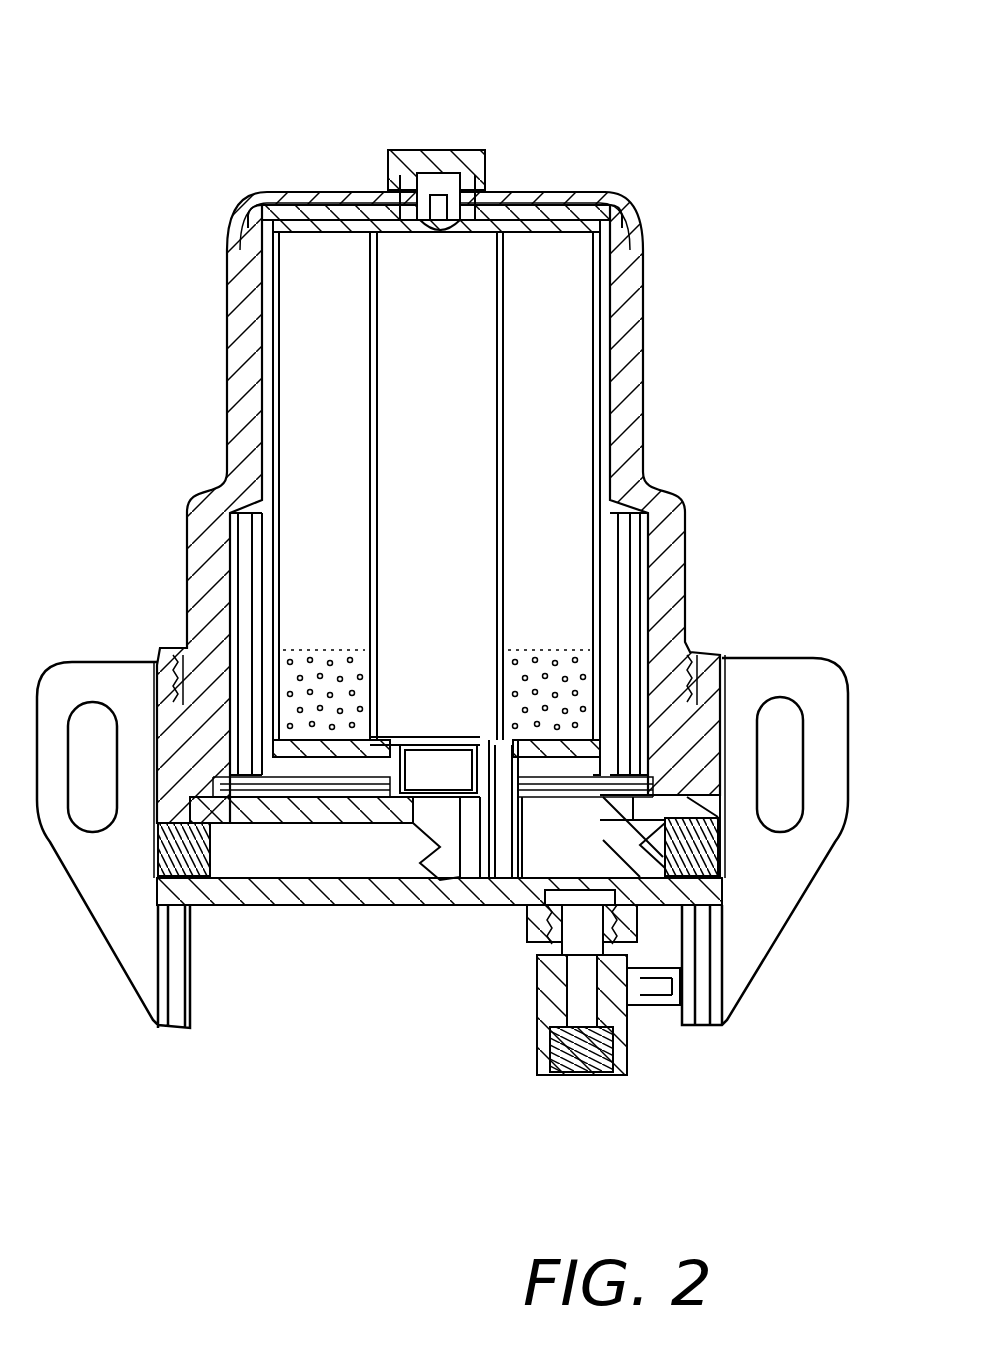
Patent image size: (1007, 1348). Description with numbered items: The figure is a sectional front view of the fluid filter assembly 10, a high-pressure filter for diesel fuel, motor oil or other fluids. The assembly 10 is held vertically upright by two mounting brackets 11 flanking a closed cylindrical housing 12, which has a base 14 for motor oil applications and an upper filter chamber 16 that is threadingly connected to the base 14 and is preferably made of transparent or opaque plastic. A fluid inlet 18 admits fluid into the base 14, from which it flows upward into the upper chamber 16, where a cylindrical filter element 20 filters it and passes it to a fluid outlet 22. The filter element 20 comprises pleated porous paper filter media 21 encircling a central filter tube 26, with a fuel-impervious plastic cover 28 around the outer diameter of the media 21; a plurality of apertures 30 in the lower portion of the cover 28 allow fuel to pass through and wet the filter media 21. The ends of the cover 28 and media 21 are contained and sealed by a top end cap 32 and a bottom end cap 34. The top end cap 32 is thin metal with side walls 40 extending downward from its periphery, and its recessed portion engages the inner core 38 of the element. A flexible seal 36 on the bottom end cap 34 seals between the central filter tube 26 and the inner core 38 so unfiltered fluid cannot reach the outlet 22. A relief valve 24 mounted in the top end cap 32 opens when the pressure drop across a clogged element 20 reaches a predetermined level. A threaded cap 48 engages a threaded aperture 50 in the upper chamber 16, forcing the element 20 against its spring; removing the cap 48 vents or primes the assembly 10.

The fluid filter assembly 10 is at (712, 382).
The mounting brackets 11 is at (68, 660).
The housing 12 is at (688, 560).
The base 14 is at (313, 908).
The upper filter chamber 16 is at (192, 503).
The fluid inlet 18 is at (723, 855).
The filter element 20 is at (617, 306).
The filter media 21 is at (305, 290).
The fluid outlet 22 is at (168, 858).
The relief valve 24 is at (438, 235).
The central filter tube 26 is at (385, 385).
The plastic cover 28 is at (560, 270).
The apertures 30 is at (322, 648).
The top end cap 32 is at (600, 192).
The bottom end cap 34 is at (495, 790).
The flexible seal 36 is at (515, 745).
The inner core 38 is at (436, 488).
The side walls 40 is at (250, 205).
The threaded cap 48 is at (430, 150).
The threaded aperture 50 is at (400, 178).